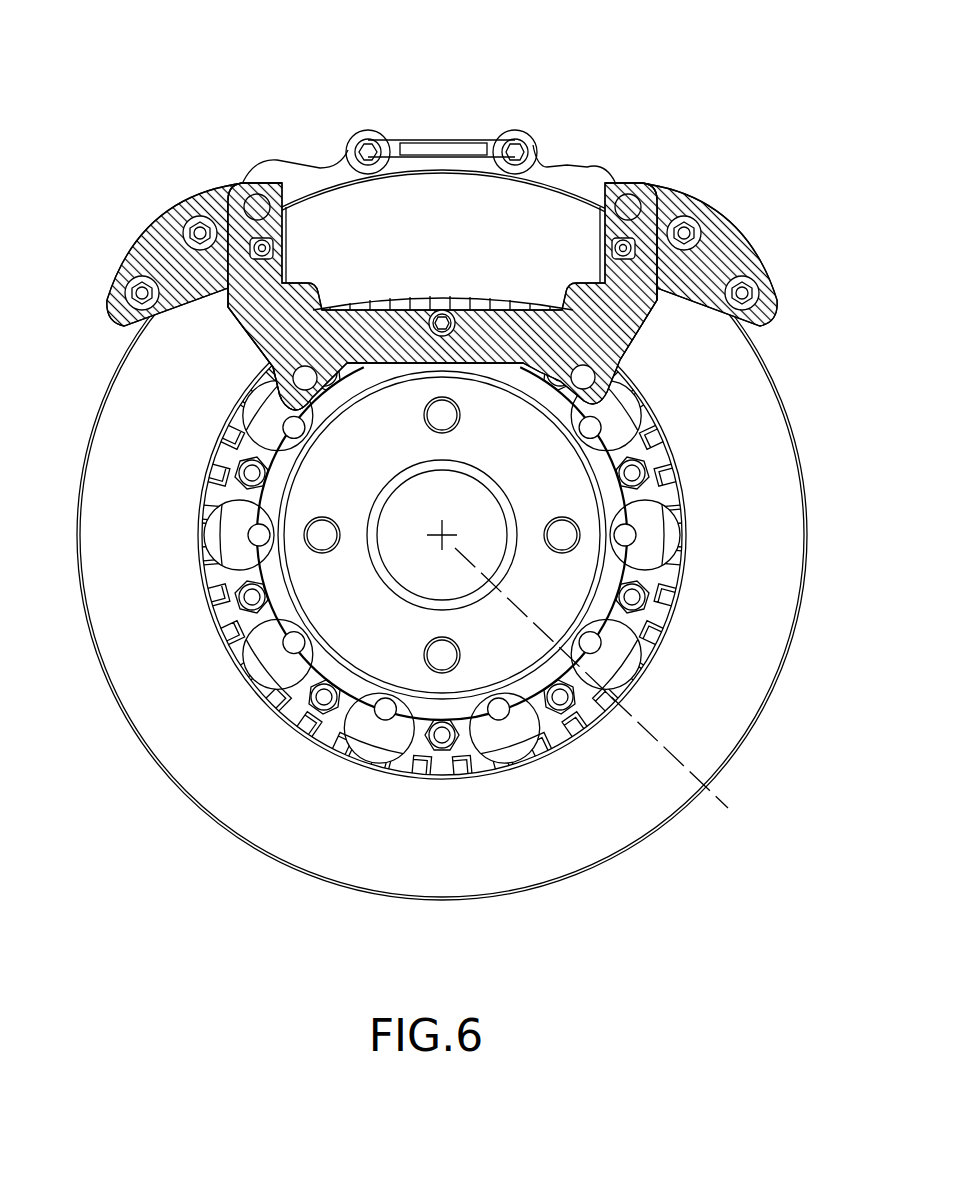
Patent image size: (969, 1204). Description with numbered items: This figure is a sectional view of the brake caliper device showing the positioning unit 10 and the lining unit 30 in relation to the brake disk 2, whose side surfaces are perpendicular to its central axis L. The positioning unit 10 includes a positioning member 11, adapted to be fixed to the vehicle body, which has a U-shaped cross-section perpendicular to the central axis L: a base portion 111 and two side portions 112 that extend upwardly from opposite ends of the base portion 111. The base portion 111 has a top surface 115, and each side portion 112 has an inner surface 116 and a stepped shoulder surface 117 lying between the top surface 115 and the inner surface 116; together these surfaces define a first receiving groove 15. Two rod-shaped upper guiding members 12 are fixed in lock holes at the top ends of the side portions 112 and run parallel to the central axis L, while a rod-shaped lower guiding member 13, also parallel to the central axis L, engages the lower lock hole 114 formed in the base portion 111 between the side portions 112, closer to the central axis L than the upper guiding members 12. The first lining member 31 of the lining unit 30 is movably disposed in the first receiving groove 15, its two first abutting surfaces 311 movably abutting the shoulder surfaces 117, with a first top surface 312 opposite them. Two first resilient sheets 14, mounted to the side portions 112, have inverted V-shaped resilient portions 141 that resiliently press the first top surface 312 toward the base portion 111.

The brake disk 2 is at (735, 722).
The central axis L is at (603, 691).
The positioning unit 10 is at (484, 259).
The positioning member 11 is at (484, 259).
The upper guiding members 12 is at (243, 212).
The lower guiding member 13 is at (465, 188).
The first resilient sheets 14 is at (595, 182).
The first receiving groove 15 is at (557, 306).
The lining unit 30 is at (452, 143).
The first lining member 31 is at (452, 178).
The base portion 111 is at (503, 357).
The side portions 112 is at (646, 253).
The lower lock hole 114 is at (443, 312).
The top surface 115 is at (273, 349).
The inner surface 116 is at (254, 200).
The stepped shoulder surface 117 is at (248, 312).
The resilient portion 141 is at (299, 178).
The first abutting surfaces 311 is at (280, 257).
The first top surface 312 is at (487, 170).